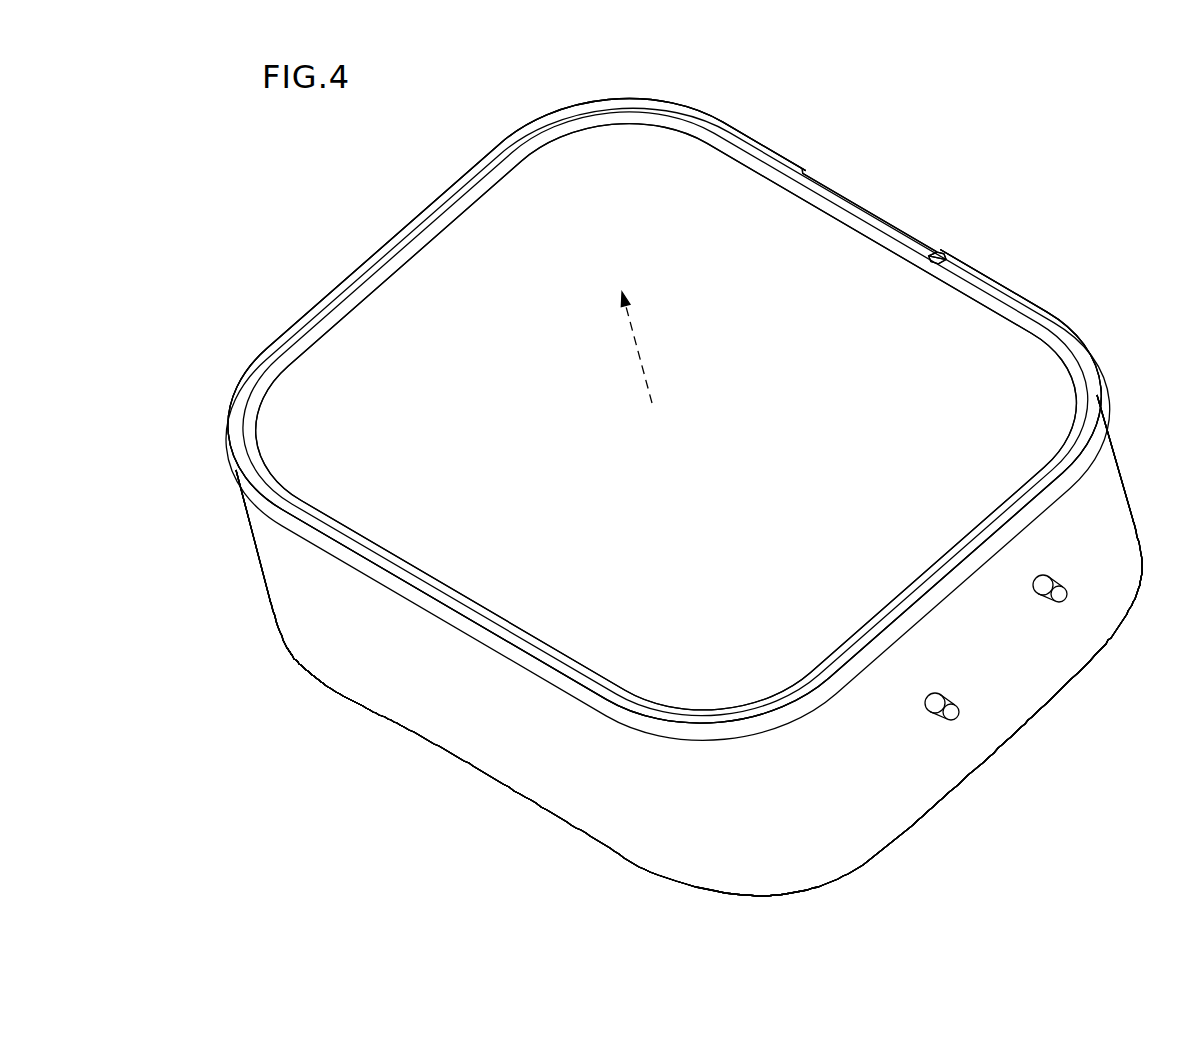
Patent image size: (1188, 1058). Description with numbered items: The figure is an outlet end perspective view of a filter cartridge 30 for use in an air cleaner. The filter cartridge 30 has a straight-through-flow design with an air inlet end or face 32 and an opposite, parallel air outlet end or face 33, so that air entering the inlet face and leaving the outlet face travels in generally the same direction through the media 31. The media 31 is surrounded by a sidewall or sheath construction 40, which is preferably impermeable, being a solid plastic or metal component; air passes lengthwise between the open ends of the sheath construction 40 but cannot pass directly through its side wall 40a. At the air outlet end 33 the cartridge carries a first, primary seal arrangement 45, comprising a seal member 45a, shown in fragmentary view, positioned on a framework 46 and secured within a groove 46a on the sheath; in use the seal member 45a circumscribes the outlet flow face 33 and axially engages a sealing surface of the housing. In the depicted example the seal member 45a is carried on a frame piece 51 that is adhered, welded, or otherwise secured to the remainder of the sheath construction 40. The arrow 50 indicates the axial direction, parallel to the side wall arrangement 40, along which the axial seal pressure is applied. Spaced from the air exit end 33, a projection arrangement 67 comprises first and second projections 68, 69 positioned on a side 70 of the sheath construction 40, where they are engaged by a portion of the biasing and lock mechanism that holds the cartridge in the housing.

The filter cartridge 30 is at (1006, 122).
The media 31 is at (683, 143).
The air inlet end or face 32 is at (870, 862).
The air outlet end or face 33 is at (608, 234).
The sidewall or sheath construction 40 is at (1120, 487).
The side wall 40a is at (995, 730).
The first, primary, seal arrangement 45 is at (967, 198).
The seal member 45a is at (853, 203).
The framework 46 is at (1010, 302).
The groove 46a is at (760, 160).
The arrow 50 is at (640, 355).
The frame piece 51 is at (1100, 377).
The projection arrangement 67 is at (1066, 687).
The first projection 68 is at (1050, 583).
The second projection 69 is at (942, 700).
The side 70 is at (940, 780).